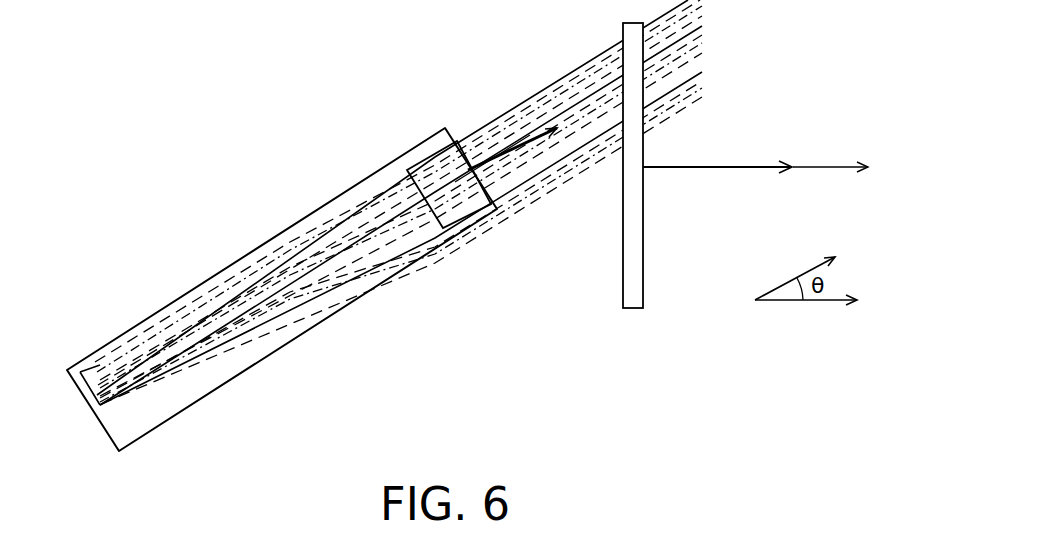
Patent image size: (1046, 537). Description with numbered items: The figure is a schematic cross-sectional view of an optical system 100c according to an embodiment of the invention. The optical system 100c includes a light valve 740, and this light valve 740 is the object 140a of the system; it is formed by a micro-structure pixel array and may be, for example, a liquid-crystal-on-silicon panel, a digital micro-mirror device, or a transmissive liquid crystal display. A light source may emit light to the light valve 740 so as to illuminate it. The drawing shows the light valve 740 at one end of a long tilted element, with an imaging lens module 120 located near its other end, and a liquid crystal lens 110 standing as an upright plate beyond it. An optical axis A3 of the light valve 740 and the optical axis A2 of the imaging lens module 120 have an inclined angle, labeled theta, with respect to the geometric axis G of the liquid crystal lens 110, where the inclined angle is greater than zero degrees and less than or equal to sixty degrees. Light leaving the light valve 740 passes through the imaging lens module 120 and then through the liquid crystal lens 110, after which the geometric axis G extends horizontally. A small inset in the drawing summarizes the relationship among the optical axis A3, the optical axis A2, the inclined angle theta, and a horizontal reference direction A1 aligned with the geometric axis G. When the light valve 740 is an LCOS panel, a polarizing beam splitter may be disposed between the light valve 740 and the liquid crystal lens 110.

The light valve 740 is at (103, 338).
The object 140a is at (85, 378).
The imaging lens module 120 is at (418, 176).
The liquid crystal lens 110 is at (645, 287).
The first direction A1 is at (718, 166).
The optical axis of the imaging lens module A2 is at (537, 132).
The optical axis of the light valve A3 is at (487, 155).
The geometric axis of the liquid crystal lens G is at (828, 166).
The optical system 100c is at (808, 405).